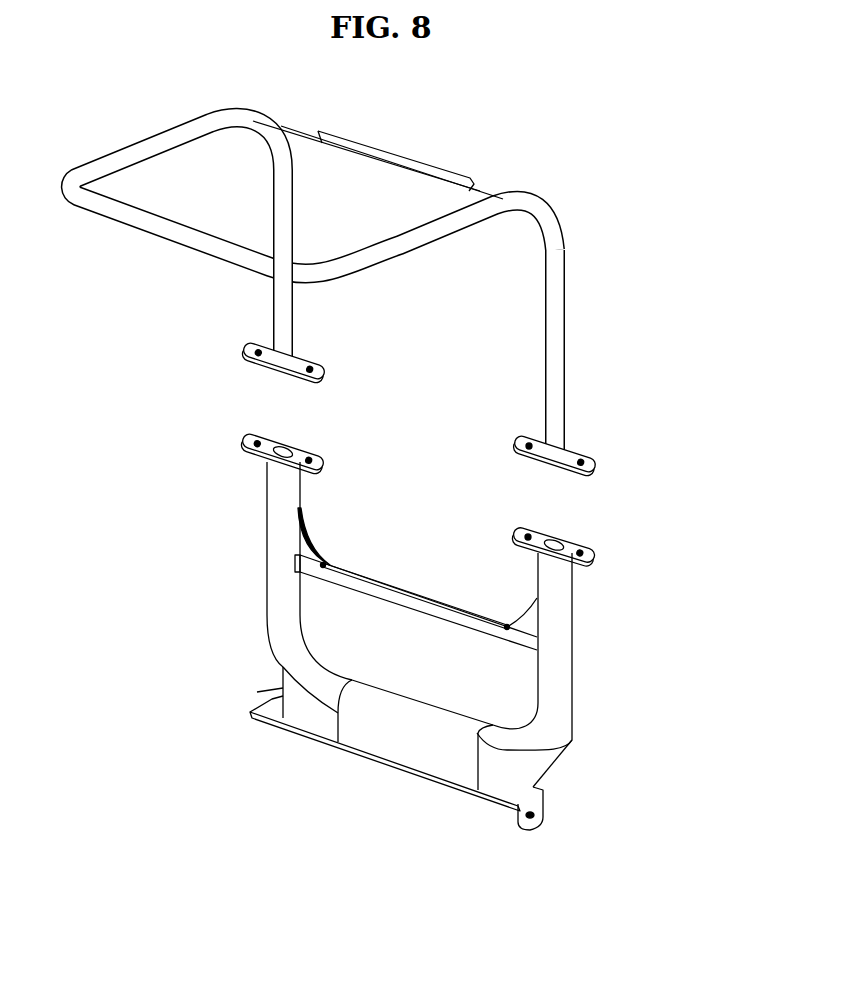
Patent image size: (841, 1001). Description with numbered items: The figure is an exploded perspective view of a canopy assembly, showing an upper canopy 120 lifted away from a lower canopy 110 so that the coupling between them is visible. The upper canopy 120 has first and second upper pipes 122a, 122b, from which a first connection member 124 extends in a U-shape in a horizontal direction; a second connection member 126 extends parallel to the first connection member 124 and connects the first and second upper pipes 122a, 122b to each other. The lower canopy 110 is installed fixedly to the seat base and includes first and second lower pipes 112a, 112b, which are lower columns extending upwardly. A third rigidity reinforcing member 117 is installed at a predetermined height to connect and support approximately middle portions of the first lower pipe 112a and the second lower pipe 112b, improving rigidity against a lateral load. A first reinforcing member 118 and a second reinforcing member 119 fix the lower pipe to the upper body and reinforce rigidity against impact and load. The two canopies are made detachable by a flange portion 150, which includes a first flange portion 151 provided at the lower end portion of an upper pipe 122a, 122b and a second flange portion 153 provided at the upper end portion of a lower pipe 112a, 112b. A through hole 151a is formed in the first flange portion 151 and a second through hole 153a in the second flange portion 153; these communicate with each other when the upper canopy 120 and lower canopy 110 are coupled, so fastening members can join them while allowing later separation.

The lower canopy 110 is at (417, 631).
The first lower pipe 112a is at (268, 565).
The second lower pipe 112b is at (570, 624).
The third rigidity reinforcing member 117 is at (410, 597).
The first reinforcing member 118 is at (283, 690).
The second reinforcing member 119 is at (537, 762).
The upper canopy 120 is at (356, 285).
The first upper pipe 122a is at (277, 312).
The second upper pipe 122b is at (563, 388).
The first connection member 124 is at (115, 215).
The second connection member 126 is at (397, 153).
The flange portion 150 is at (589, 486).
The first flange portion 151 is at (568, 440).
The through hole 151a is at (524, 443).
The second flange portion 153 is at (568, 531).
The second through hole 153a is at (524, 536).